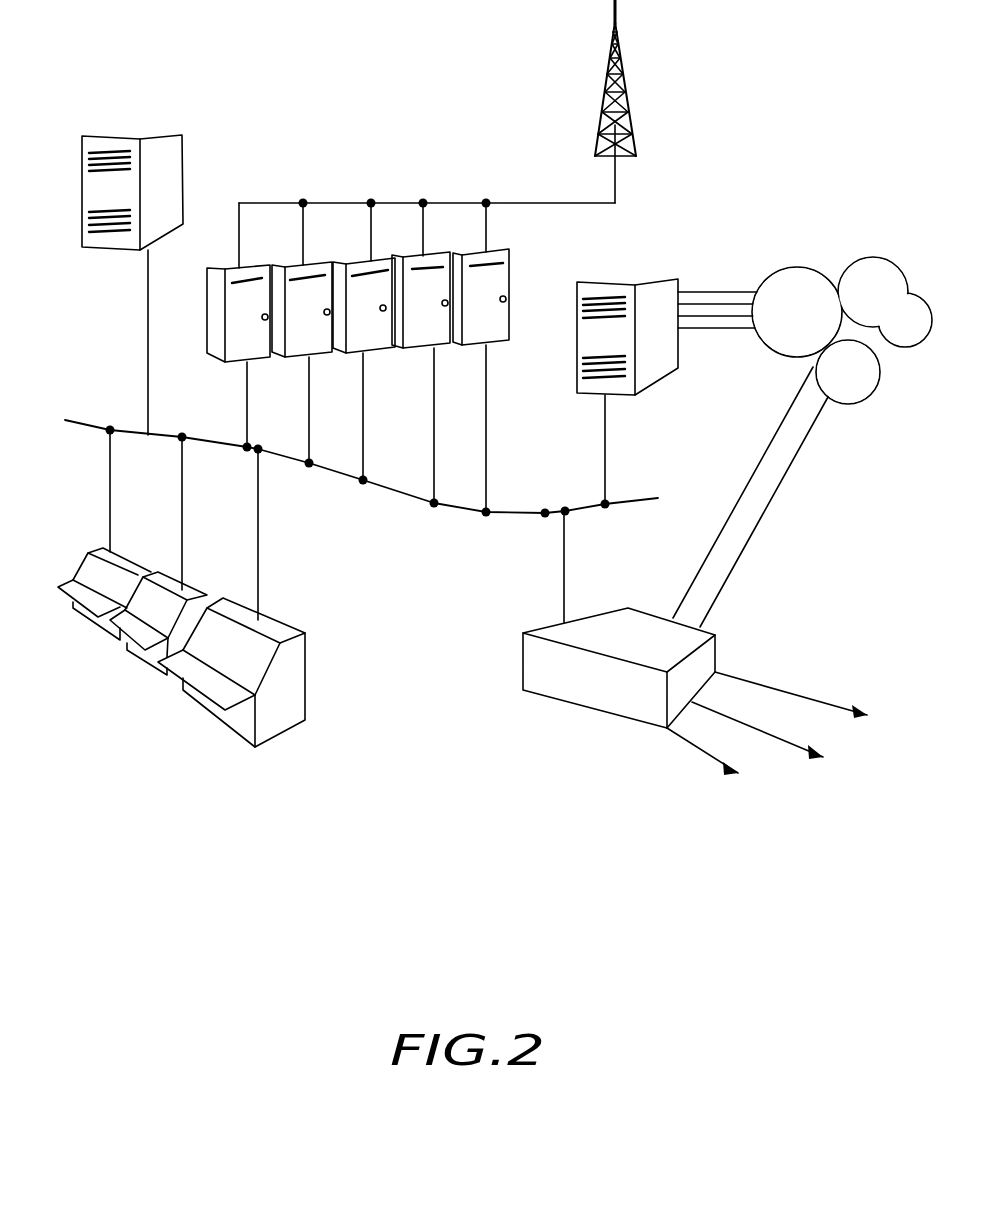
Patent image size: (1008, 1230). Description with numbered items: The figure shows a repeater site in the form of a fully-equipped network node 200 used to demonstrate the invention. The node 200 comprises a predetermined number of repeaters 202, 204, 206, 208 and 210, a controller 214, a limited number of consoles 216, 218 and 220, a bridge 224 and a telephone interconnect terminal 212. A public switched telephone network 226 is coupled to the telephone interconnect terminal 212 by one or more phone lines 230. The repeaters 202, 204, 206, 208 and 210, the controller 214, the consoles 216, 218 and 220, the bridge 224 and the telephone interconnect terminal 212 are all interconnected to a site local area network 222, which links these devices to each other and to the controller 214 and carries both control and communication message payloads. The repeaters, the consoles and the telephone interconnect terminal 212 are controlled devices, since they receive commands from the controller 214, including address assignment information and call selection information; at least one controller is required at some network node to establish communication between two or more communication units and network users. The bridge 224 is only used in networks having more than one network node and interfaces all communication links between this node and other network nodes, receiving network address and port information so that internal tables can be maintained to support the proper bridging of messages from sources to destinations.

The network node 200 is at (373, 117).
The repeater 202 is at (262, 360).
The repeater 204 is at (327, 352).
The repeater 206 is at (378, 350).
The repeater 208 is at (448, 345).
The repeater 210 is at (510, 330).
The telephone interconnect terminal 212 is at (662, 380).
The controller 214 is at (166, 232).
The console 216 is at (103, 548).
The console 218 is at (173, 575).
The console 220 is at (243, 602).
The site local area network 222 is at (546, 512).
The bridge 224 is at (537, 627).
The public switched telephone network 226 is at (797, 265).
The phone lines 230 is at (713, 297).